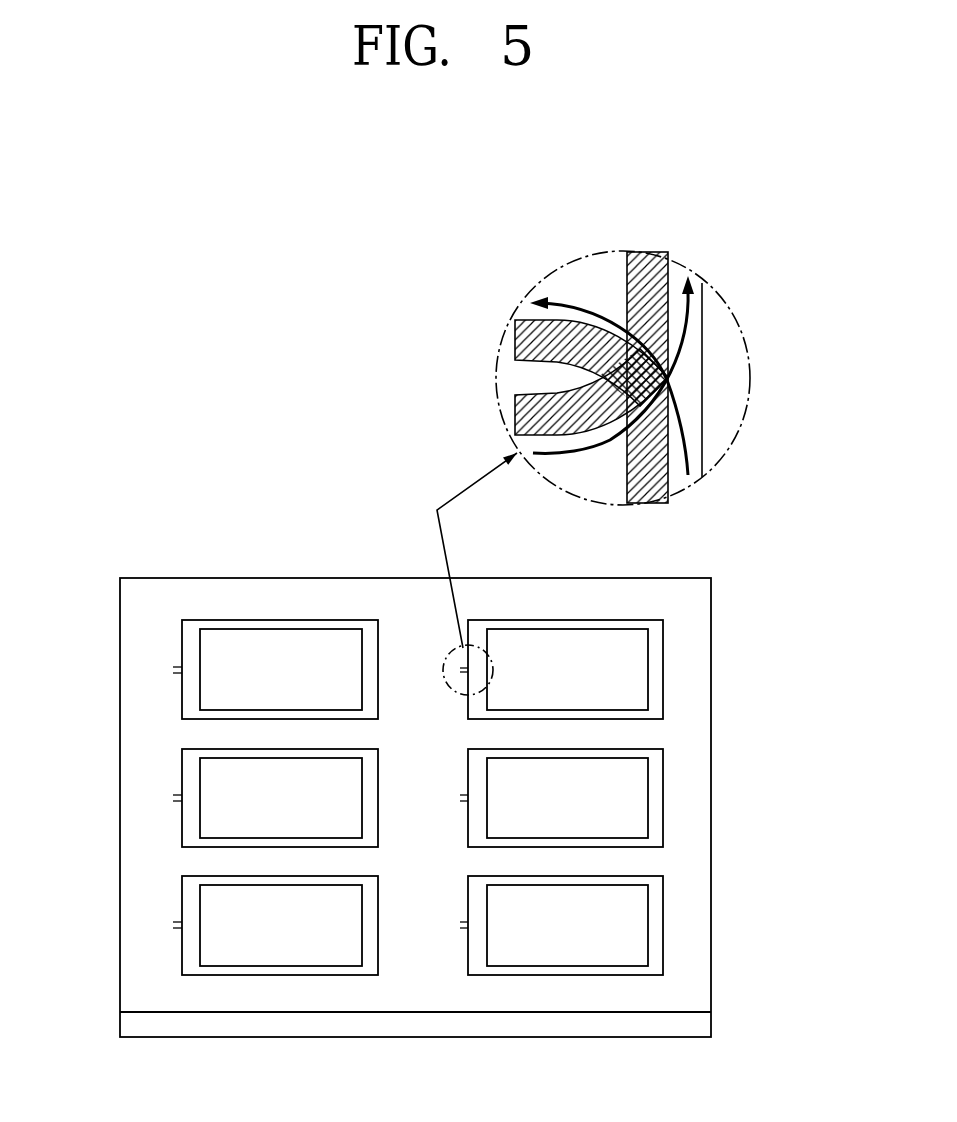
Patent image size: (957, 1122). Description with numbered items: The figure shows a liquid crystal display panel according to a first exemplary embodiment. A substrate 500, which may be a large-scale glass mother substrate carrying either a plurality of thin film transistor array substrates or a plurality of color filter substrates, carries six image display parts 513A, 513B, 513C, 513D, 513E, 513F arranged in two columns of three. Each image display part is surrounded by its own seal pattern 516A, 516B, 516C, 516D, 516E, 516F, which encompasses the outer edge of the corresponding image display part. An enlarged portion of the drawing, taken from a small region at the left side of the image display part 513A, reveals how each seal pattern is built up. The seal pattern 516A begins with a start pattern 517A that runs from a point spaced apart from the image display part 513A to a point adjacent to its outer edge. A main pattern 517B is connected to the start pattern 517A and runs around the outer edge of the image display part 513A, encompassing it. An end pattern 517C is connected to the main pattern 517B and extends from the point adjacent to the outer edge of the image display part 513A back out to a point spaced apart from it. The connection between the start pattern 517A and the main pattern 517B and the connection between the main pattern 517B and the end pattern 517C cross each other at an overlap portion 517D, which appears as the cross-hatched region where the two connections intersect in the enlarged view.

The substrate 500 is at (697, 1028).
The image display part 513A is at (592, 683).
The image display part 513B is at (592, 811).
The image display part 513C is at (592, 938).
The image display part 513D is at (315, 683).
The image display part 513E is at (315, 811).
The image display part 513F is at (315, 938).
The seal pattern 516A is at (663, 669).
The seal pattern 516B is at (663, 797).
The seal pattern 516C is at (663, 925).
The seal pattern 516D is at (182, 645).
The seal pattern 516E is at (182, 773).
The seal pattern 516F is at (182, 899).
The start pattern 517A is at (522, 422).
The main pattern 517B is at (644, 258).
The end pattern 517C is at (517, 340).
The overlap portion 517D is at (660, 350).